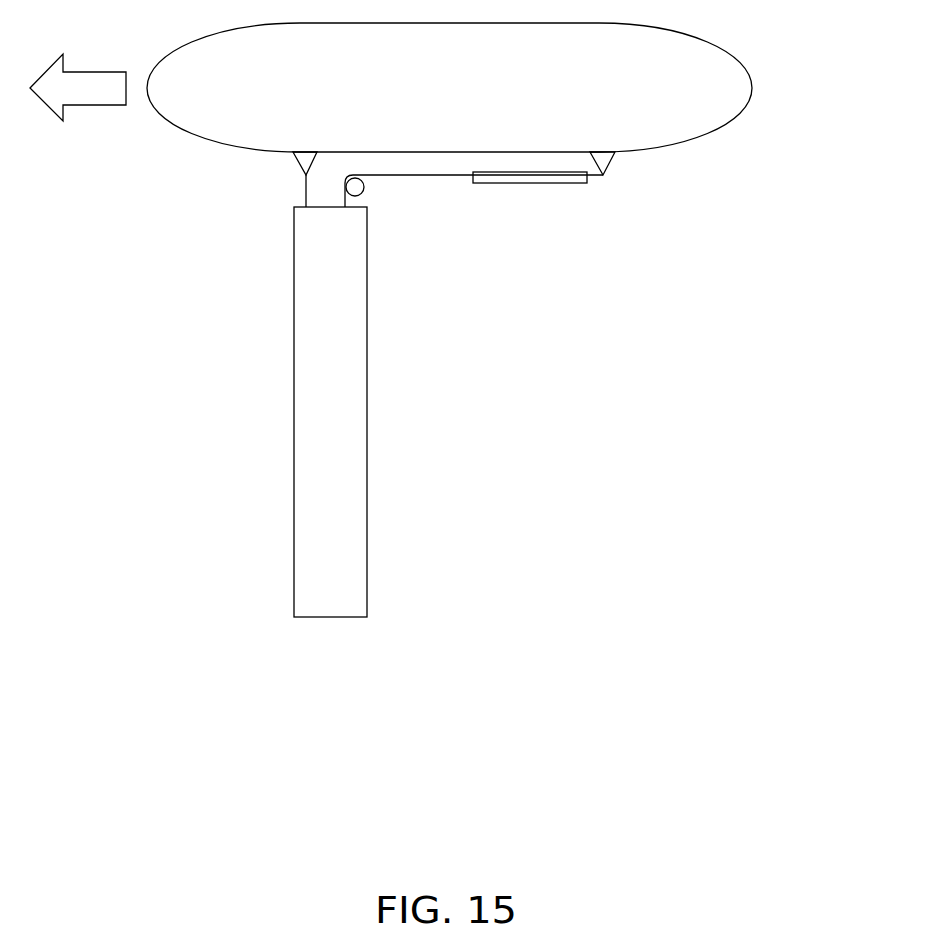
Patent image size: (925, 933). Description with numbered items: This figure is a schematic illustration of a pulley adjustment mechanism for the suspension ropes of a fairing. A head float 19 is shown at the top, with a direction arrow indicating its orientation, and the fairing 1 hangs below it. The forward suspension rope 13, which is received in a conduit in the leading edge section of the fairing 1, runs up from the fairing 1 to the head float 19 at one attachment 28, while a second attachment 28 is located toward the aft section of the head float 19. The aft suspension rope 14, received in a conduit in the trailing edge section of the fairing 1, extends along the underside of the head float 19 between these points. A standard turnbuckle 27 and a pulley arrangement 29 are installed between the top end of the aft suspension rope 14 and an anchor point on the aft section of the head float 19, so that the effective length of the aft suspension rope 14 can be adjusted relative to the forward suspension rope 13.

The vaping device body 1 is at (367, 457).
The forward suspension rope 13 is at (299, 191).
The aft suspension rope 14 is at (443, 185).
The head float 19 is at (738, 117).
The turnbuckle 27 is at (545, 188).
The attachment wedge 28 is at (292, 167).
The pulley arrangement 29 is at (372, 192).